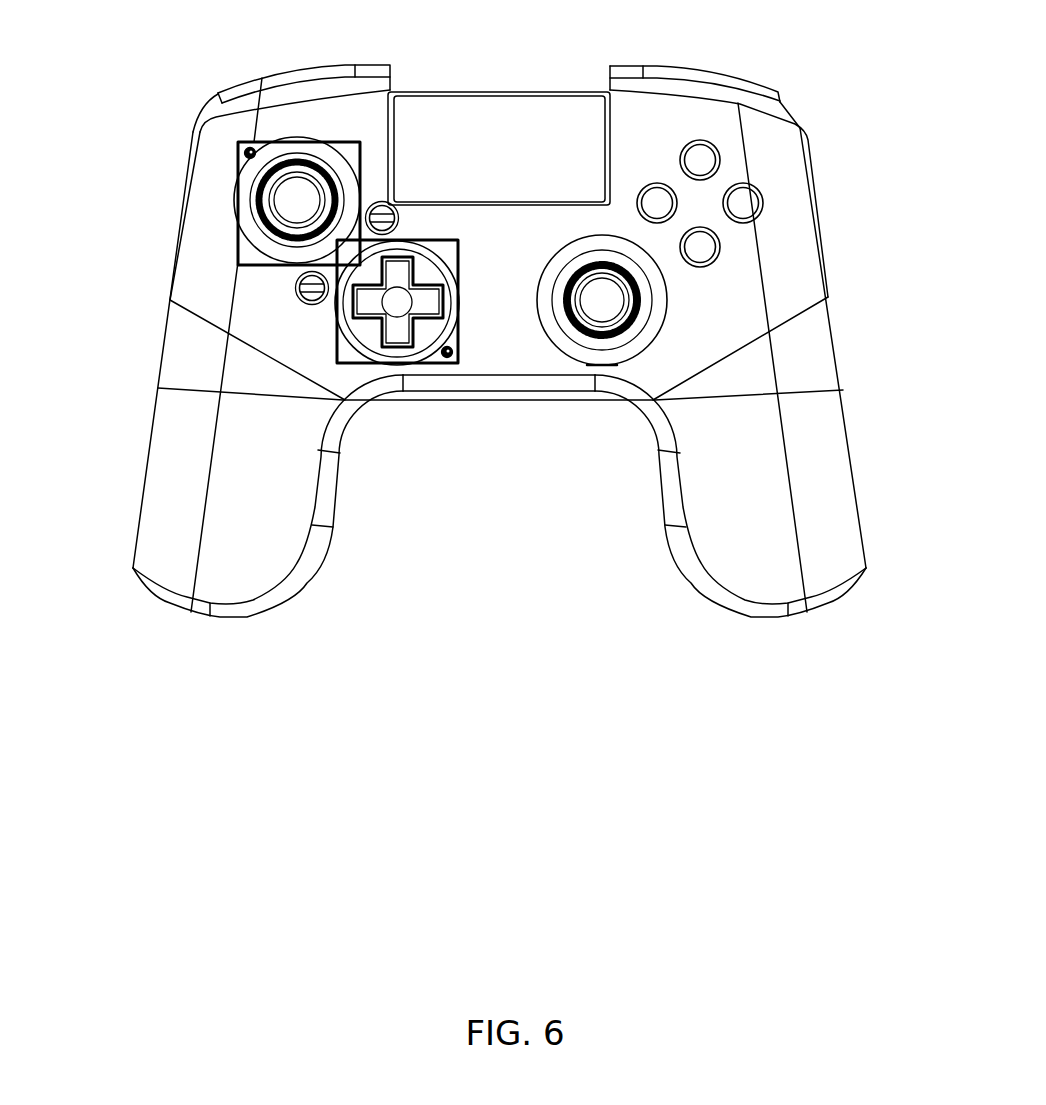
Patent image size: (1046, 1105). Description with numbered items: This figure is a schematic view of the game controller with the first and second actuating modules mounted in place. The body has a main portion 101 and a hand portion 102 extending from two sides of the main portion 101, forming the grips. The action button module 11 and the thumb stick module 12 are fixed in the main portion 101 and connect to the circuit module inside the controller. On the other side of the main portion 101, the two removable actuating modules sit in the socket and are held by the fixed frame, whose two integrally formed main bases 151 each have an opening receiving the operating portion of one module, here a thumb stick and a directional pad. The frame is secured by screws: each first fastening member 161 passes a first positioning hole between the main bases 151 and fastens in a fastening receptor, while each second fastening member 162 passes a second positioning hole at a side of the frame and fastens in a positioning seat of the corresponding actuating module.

The main portion 101 is at (797, 262).
The hand portion 102 is at (153, 412).
The action button module 11 is at (703, 155).
The thumb stick module 12 is at (603, 301).
The main base 151 is at (292, 152).
The first fastening member 161 is at (386, 205).
The second fastening member 162 is at (244, 153).